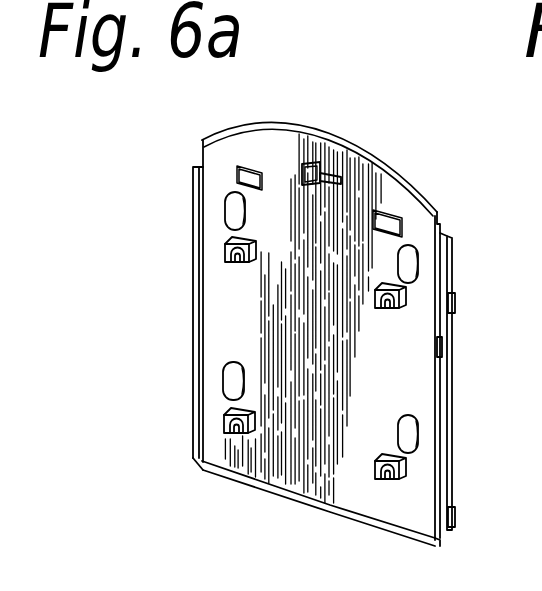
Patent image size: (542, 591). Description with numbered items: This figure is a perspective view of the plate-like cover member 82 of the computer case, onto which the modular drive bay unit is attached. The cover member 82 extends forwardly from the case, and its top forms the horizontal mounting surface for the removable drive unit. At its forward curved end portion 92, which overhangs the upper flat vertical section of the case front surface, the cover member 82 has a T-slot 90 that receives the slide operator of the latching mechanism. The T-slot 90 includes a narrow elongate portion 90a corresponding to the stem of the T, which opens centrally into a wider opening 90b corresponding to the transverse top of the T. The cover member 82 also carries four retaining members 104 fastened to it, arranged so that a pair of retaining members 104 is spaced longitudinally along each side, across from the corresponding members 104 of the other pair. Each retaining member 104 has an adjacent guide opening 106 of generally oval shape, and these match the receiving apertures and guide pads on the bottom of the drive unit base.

The cover member 82 is at (163, 323).
The T-slot 90 is at (313, 157).
The narrow elongate portion 90a is at (342, 180).
The wider opening 90b is at (304, 165).
The forward curved end portion 92 is at (407, 200).
The retaining member 104 is at (236, 253).
The guide opening 106 is at (231, 209).